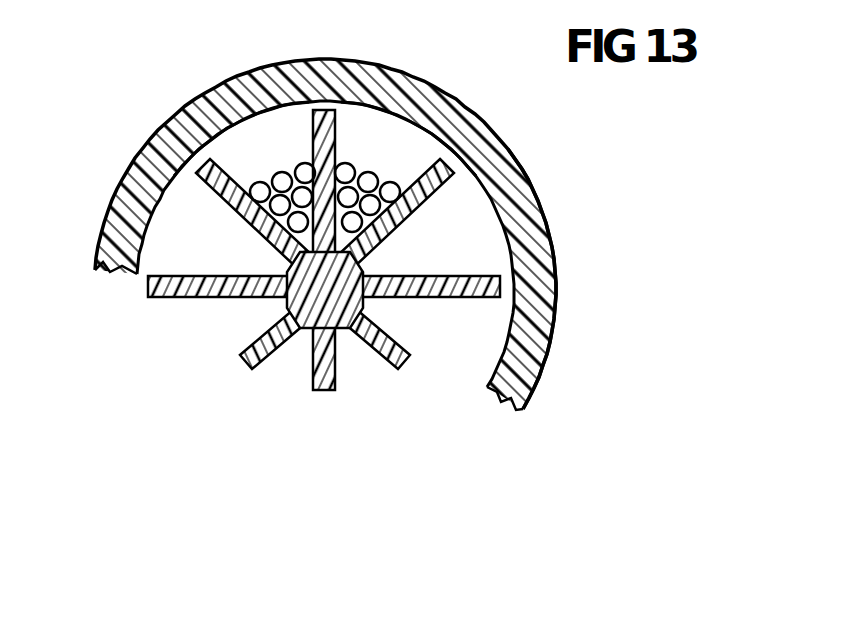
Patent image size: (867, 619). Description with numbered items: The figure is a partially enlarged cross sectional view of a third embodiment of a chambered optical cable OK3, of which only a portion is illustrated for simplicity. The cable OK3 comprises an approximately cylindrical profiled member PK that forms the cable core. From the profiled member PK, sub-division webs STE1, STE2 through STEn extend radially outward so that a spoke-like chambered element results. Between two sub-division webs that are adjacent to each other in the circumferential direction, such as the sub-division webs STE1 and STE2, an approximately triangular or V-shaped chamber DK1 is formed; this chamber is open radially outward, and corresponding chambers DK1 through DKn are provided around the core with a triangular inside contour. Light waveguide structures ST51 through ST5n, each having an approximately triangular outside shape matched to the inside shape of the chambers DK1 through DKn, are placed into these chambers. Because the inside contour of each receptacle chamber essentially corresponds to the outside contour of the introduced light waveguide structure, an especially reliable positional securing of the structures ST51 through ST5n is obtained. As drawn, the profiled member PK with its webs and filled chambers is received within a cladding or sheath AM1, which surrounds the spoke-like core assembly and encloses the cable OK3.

The chamber DKn is at (283, 150).
The chamber DK1 is at (392, 168).
The sub-division web STE1 is at (322, 112).
The sub-division web STE2 is at (492, 150).
The sub-division web STEn is at (197, 163).
The light waveguide structure ST51 is at (368, 148).
The light waveguide structure ST5n is at (257, 157).
The cladding or sheath AM1 is at (527, 217).
The chambered cable OK3 is at (586, 261).
The profiled member PK is at (340, 312).